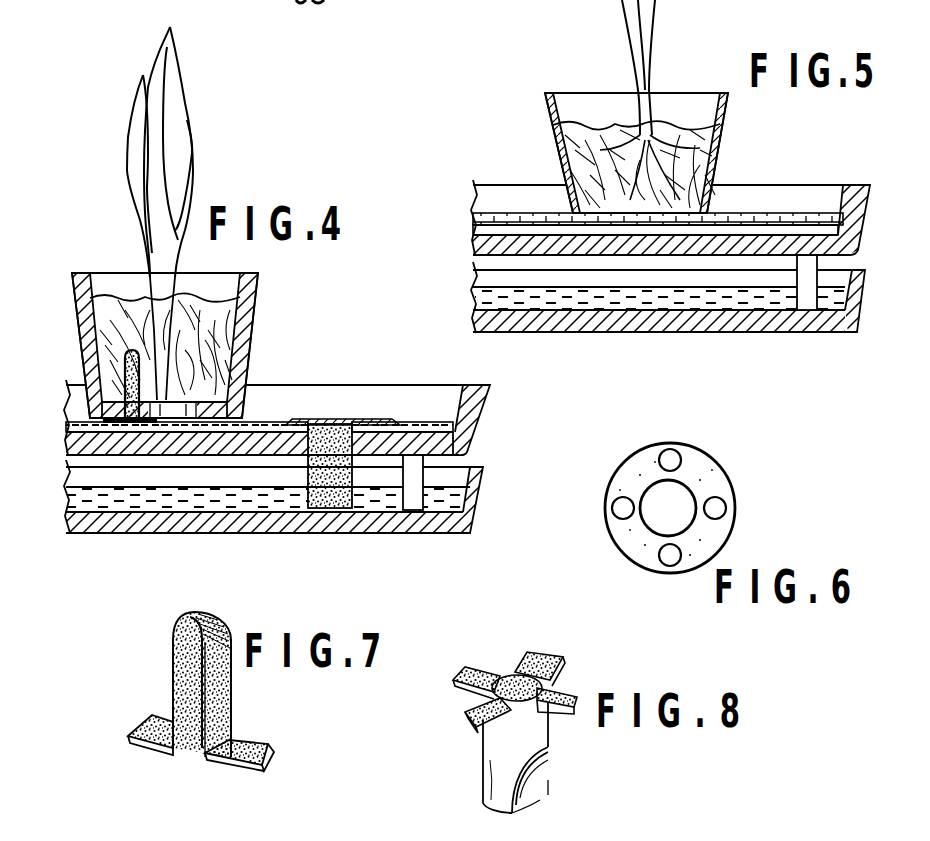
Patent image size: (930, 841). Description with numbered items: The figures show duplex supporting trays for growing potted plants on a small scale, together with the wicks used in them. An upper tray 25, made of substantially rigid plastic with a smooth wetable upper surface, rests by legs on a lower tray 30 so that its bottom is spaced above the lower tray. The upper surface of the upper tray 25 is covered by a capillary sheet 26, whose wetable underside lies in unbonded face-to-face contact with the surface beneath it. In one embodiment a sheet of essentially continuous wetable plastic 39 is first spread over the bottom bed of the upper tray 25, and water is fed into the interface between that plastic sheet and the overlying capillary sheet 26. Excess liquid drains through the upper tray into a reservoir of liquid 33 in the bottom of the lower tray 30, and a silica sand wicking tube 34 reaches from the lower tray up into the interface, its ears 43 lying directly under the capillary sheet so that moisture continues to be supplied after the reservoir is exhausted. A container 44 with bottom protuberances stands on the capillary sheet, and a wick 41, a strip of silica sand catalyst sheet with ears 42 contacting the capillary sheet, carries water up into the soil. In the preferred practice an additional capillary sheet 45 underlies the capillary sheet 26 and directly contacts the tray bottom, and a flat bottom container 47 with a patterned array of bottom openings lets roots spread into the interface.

In FIG. 4, the upper tray 25 is at (471, 405).
In FIG. 5, the upper tray 25 is at (492, 240).
In FIG. 4, the capillary sheet 26 is at (257, 421).
In FIG. 5, the capillary sheet 26 is at (498, 216).
In FIG. 4, the lower tray 30 is at (183, 520).
In FIG. 5, the lower tray 30 is at (568, 323).
In FIG. 4, the reservoir of liquid 33 is at (292, 496).
In FIG. 5, the reservoir of liquid 33 is at (700, 303).
In FIG. 4, the silica sand wicking tube 34 is at (345, 475).
In FIG. 8, the silica sand wicking tube 34 is at (540, 737).
In FIG. 4, the continuous wetable plastic sheet 39 is at (449, 440).
In FIG. 4, the wick 41 is at (121, 378).
In FIG. 7, the wick 41 is at (178, 672).
In FIG. 7, the ears 42 is at (245, 742).
In FIG. 4, the ears 43 is at (364, 421).
In FIG. 8, the ears 43 is at (543, 664).
In FIG. 4, the container 44 is at (249, 323).
In FIG. 5, the additional capillary sheet 45 is at (482, 221).
In FIG. 5, the flat bottom container 47 is at (723, 137).